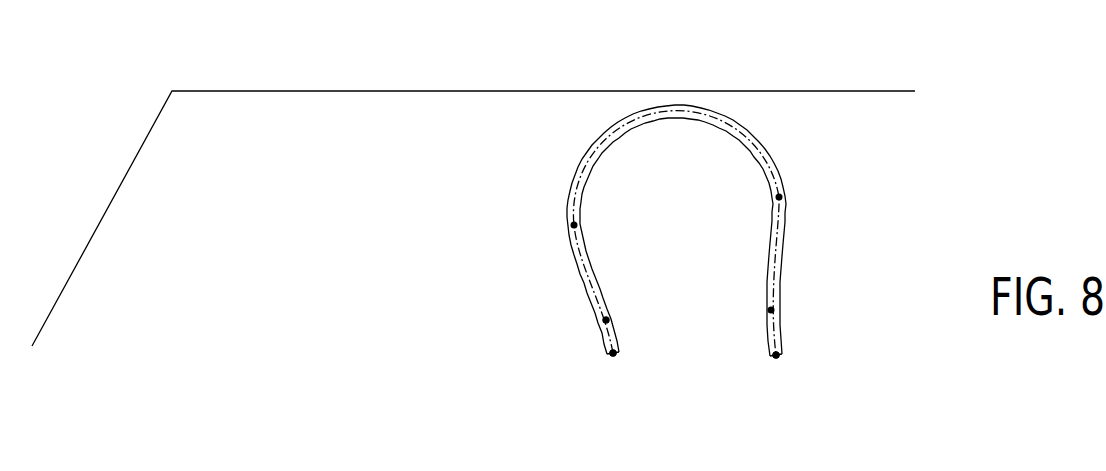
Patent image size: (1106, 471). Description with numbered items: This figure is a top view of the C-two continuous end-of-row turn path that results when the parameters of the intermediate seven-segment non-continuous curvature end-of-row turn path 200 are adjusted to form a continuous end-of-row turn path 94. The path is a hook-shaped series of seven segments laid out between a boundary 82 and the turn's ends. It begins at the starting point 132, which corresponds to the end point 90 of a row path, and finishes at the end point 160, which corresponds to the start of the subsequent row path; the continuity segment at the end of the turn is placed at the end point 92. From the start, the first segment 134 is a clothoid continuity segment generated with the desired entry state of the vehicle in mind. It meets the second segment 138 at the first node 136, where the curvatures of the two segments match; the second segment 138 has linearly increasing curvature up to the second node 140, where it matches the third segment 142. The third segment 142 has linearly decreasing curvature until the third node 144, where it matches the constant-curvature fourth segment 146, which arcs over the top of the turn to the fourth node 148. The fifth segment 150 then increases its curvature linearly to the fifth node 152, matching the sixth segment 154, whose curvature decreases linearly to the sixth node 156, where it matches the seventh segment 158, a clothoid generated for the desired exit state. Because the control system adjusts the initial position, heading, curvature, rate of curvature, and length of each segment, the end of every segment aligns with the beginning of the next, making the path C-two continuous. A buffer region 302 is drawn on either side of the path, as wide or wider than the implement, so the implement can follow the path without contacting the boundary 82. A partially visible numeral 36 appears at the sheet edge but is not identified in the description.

The boundary 82 is at (828, 91).
The housing 36 is at (11, 461).
The intermediate seven-segment non-continuous curvature end-of-row turn path 200 is at (570, 230).
The continuous end-of-row turn path 94 is at (676, 230).
The buffer region 302 is at (600, 136).
The fourth segment 146 is at (746, 134).
The fourth node 148 is at (780, 196).
The third node 144 is at (573, 226).
The third segment 142 is at (596, 268).
The fifth segment 150 is at (777, 250).
The sixth segment 154 is at (771, 334).
The second segment 138 is at (607, 321).
The second node 140 is at (605, 322).
The fifth node 152 is at (772, 310).
The sixth node 156 is at (777, 355).
The first node 136 is at (612, 354).
The seventh segment 158 is at (775, 357).
The end point of row path 90 is at (556, 390).
The starting point 132 is at (613, 354).
The first segment 134 is at (614, 354).
The end point 92 is at (846, 384).
The end point 160 is at (777, 357).